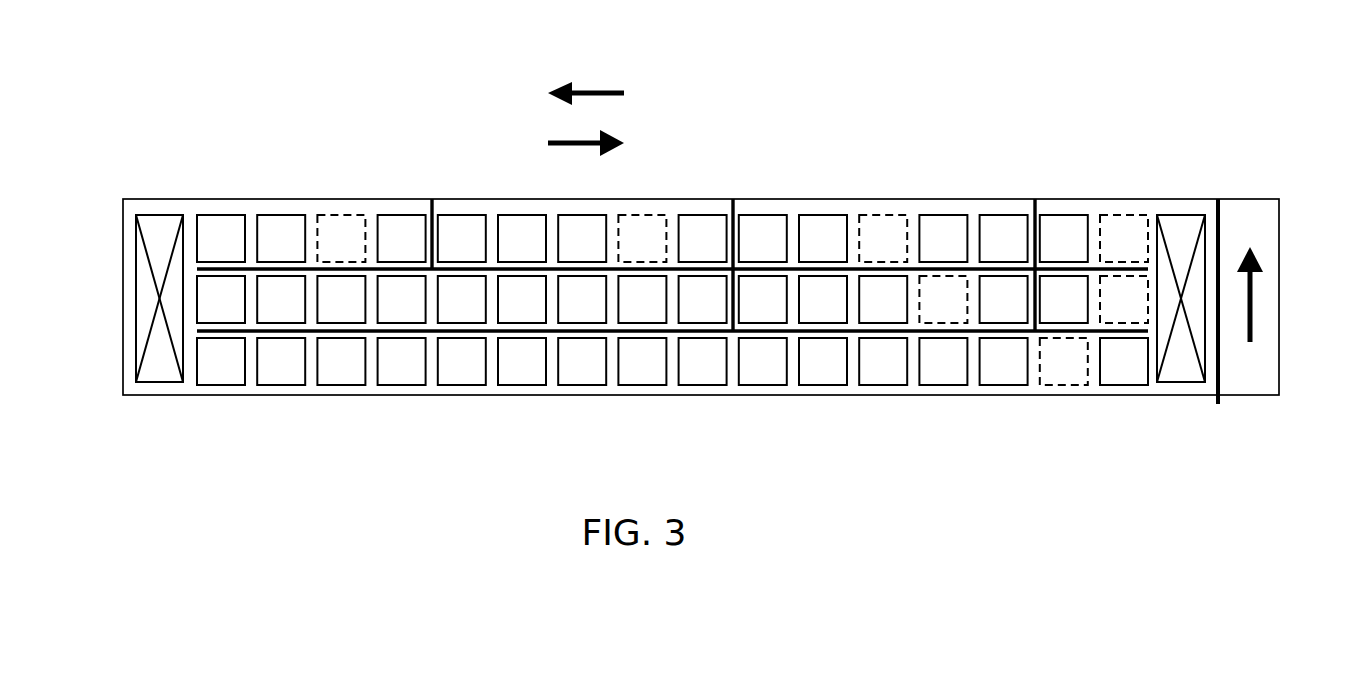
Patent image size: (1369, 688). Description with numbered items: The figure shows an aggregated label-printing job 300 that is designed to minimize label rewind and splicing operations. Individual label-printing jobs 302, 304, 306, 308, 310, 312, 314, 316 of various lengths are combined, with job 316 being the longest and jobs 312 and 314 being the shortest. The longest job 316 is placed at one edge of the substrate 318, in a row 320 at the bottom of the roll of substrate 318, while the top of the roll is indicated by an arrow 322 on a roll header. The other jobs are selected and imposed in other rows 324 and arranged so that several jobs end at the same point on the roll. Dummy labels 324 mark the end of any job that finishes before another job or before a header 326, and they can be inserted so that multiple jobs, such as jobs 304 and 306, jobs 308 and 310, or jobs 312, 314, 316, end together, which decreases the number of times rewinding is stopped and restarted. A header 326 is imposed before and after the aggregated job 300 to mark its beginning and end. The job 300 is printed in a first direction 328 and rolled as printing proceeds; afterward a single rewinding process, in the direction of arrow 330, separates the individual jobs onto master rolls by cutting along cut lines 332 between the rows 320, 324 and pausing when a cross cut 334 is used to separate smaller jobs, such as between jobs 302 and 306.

The aggregated label-printing job 300 is at (618, 508).
The label-printing job 302 is at (313, 208).
The label-printing job 304 is at (188, 300).
The label-printing job 306 is at (553, 206).
The label-printing job 308 is at (826, 206).
The label-printing job 310 is at (792, 328).
The label-printing job 312 is at (1094, 206).
The label-printing job 314 is at (1095, 326).
The label-printing job 316 is at (945, 400).
The substrate 318 is at (1279, 223).
The row 320 is at (599, 395).
The arrow 322 is at (1250, 342).
The dummy labels 324 is at (402, 215).
The header 326 is at (162, 215).
The first direction 328 is at (585, 93).
The arrow 330 is at (582, 143).
The cut lines 332 is at (254, 268).
The cross cut 334 is at (432, 199).